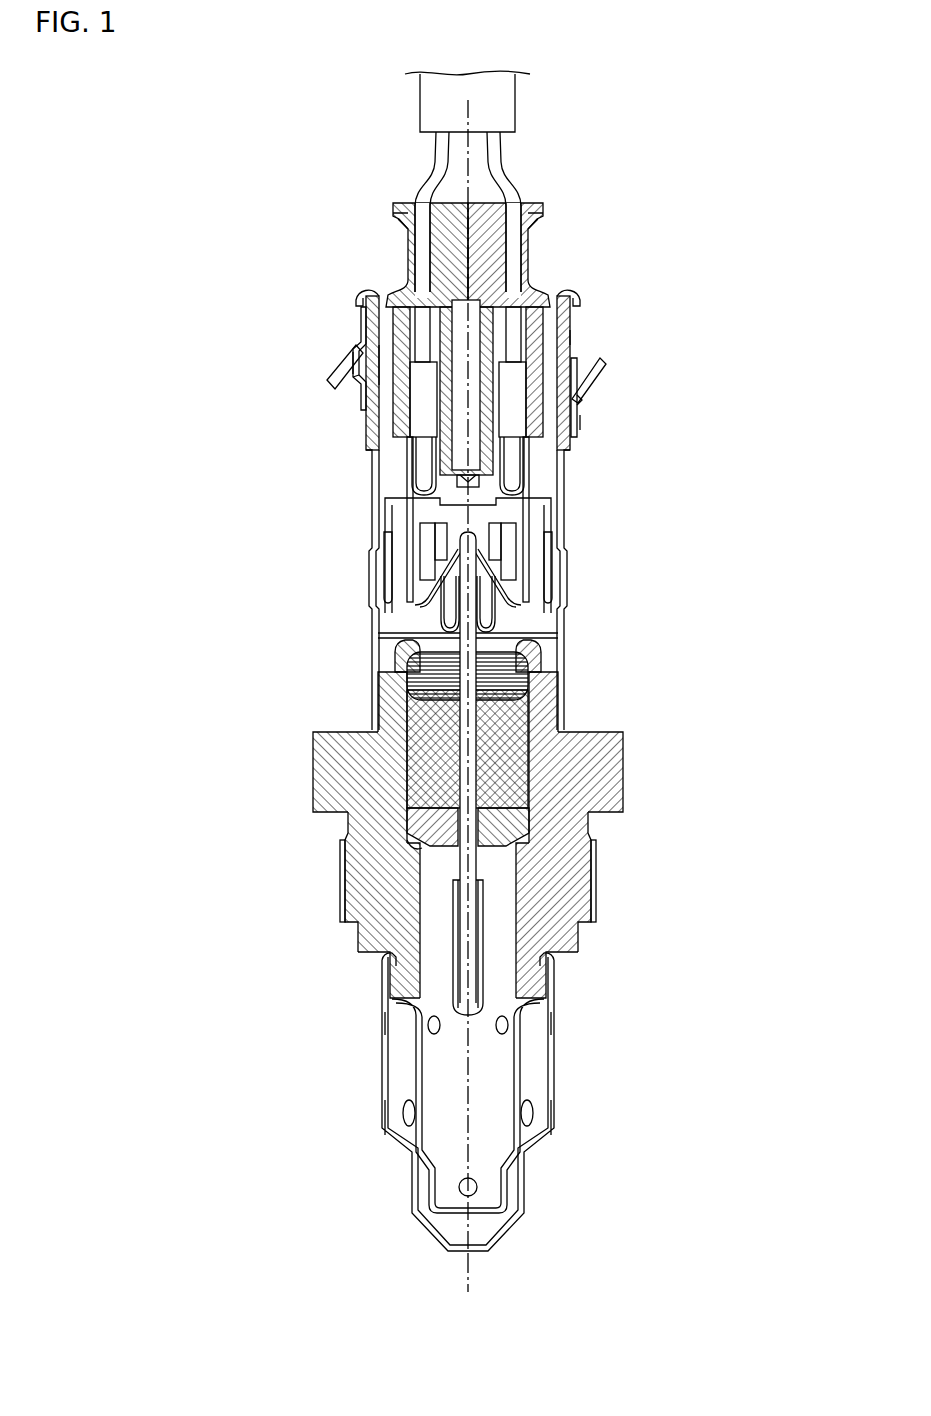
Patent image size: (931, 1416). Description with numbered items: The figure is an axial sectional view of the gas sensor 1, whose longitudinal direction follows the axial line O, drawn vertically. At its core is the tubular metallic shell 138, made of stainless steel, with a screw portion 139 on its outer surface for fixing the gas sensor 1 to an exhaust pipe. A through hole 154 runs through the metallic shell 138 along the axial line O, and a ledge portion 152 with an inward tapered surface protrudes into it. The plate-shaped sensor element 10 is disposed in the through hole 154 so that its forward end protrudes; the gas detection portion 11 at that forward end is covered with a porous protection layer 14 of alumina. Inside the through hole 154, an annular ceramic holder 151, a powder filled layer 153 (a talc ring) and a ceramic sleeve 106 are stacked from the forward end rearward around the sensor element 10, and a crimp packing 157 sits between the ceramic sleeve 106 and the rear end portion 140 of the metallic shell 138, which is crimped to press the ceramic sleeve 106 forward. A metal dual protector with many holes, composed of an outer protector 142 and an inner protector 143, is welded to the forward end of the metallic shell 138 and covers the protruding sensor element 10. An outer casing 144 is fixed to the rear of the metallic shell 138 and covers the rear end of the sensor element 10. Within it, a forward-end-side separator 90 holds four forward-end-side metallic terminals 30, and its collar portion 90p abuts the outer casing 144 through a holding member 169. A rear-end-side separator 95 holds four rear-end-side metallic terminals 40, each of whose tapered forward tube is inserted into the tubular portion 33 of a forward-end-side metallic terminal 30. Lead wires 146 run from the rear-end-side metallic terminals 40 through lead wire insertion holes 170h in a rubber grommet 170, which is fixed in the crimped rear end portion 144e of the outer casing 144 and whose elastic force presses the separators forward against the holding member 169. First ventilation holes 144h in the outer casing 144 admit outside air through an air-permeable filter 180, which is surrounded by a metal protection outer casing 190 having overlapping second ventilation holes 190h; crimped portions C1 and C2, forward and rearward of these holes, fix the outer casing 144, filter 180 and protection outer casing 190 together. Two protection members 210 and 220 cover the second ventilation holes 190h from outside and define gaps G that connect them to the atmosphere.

The gas sensor 1 is at (730, 216).
The sensor element 10 is at (413, 643).
The gas detection portion 11 is at (470, 948).
The porous protection layer 14 is at (473, 980).
The forward-end-side metallic terminal 30 is at (412, 632).
The tubular portion 33 is at (410, 485).
The rear-end-side metallic terminal 40 is at (425, 463).
The forward-end-side separator 90 is at (403, 585).
The collar portion 90p is at (387, 512).
The rear-end-side separator 95 is at (540, 455).
The ceramic sleeve 106 is at (517, 683).
The metallic shell 138 is at (342, 784).
The screw portion 139 is at (340, 883).
The rear end portion 140 is at (535, 647).
The outer protector 142 is at (383, 1145).
The inner protector 143 is at (428, 1135).
The outer casing 144 is at (567, 460).
The rear end portion 144e is at (527, 250).
The first ventilation hole 144h is at (382, 360).
The lead wire 146 is at (437, 167).
The ceramic holder 151 is at (513, 825).
The ledge portion 152 is at (410, 843).
The powder filled layer 153 is at (502, 770).
The through hole 154 is at (502, 872).
The crimp packing 157 is at (530, 663).
The holding member 169 is at (557, 527).
The grommet 170 is at (398, 207).
The lead wire insertion hole 170h is at (412, 215).
The filter 180 is at (603, 362).
The protection outer casing 190 is at (575, 382).
The second ventilation hole 190h is at (346, 386).
The protection member 210 is at (582, 400).
The protection member 220 is at (342, 363).
The crimped portion C1 is at (590, 423).
The crimped portion C2 is at (574, 330).
The gap G is at (352, 378).
The axial line O is at (468, 1273).